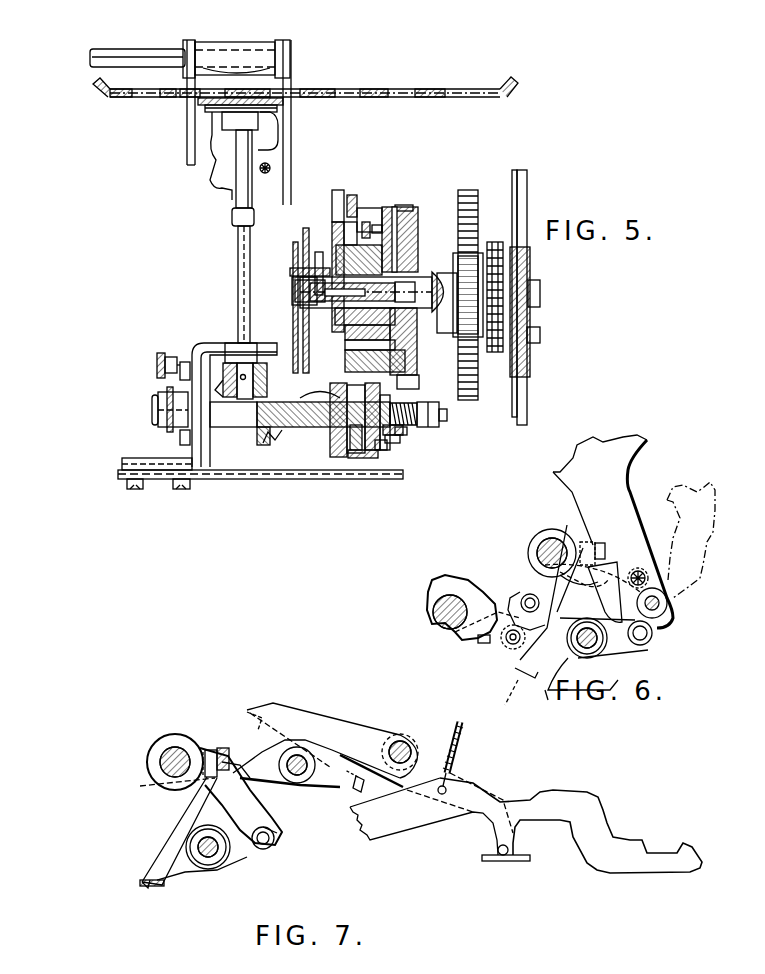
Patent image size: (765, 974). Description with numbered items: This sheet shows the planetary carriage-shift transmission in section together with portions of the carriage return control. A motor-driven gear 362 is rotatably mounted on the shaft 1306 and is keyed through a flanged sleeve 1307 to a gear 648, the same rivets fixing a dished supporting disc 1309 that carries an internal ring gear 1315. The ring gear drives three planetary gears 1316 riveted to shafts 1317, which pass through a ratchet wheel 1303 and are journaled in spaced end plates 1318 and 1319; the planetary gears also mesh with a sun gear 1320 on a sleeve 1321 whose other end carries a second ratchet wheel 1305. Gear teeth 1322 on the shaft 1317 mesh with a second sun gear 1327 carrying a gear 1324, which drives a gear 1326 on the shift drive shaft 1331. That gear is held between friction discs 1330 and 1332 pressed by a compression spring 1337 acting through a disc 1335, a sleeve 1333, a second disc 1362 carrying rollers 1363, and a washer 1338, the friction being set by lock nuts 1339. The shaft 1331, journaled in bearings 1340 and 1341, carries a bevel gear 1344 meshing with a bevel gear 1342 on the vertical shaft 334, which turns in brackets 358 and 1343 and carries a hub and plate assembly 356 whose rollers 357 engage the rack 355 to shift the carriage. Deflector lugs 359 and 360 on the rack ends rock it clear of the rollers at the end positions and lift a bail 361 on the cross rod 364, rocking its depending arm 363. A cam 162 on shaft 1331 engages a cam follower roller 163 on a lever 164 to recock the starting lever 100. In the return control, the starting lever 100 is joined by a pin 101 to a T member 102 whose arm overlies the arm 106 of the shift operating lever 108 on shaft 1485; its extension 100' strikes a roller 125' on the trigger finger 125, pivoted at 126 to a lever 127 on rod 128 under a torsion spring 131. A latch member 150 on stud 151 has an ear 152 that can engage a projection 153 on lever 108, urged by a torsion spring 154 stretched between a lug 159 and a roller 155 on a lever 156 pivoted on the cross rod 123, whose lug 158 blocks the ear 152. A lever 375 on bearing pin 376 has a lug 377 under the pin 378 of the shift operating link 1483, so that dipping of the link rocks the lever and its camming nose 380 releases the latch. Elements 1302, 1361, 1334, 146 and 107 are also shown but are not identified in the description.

In FIG. 5, the cross rod 364 is at (133, 50).
In FIG. 5, the depending arm 363 is at (190, 42).
In FIG. 5, the bail 361 is at (258, 42).
In FIG. 5, the shift rack 355 is at (372, 83).
In FIG. 5, the deflector lug 360 is at (97, 86).
In FIG. 5, the deflector lug 359 is at (514, 85).
In FIG. 5, the rollers 357 is at (210, 103).
In FIG. 5, the hub and plate assembly 356 is at (215, 110).
In FIG. 5, the bracket 358 is at (217, 155).
In FIG. 5, the vertical shaft 334 is at (238, 192).
In FIG. 5, the second bevel gear 1342 is at (222, 345).
In FIG. 5, the bracket 1343 is at (196, 350).
In FIG. 5, the friction disc 1330 is at (398, 478).
In FIG. 5, the disc 1335 is at (300, 392).
In FIG. 5, the cam follower roller 163 is at (157, 358).
In FIG. 5, the lever 164 is at (165, 370).
In FIG. 5, the bearing 1341 is at (178, 402).
In FIG. 5, the cam 162 is at (165, 410).
In FIG. 5, the gear 1324 is at (335, 212).
In FIG. 5, the second ratchet wheel 1305 is at (318, 250).
In FIG. 5, the hub 1302 is at (362, 195).
In FIG. 5, the ratchet wheel 1303 is at (372, 222).
In FIG. 5, the gear teeth 1322 is at (382, 228).
In FIG. 5, the internal ring gear 1315 is at (408, 206).
In FIG. 5, the dished supporting disc 1309 is at (412, 214).
In FIG. 5, the sun gear 1320 is at (412, 250).
In FIG. 5, the flanged sleeve 1307 is at (410, 265).
In FIG. 5, the second sun gear 1327 is at (298, 270).
In FIG. 5, the shaft 1306 is at (297, 282).
In FIG. 5, the end plate 1319 is at (330, 345).
In FIG. 5, the sleeve 1321 is at (410, 340).
In FIG. 5, the shaft 1317 is at (410, 352).
In FIG. 5, the end plate 1318 is at (412, 362).
In FIG. 5, the gear 648 is at (418, 385).
In FIG. 5, the gear 362 is at (478, 215).
In FIG. 5, the planetary gears 1316 is at (478, 384).
In FIG. 5, the bearing 1340 is at (305, 445).
In FIG. 5, the beveled gear 1344 is at (290, 432).
In FIG. 5, the gear 1326 is at (338, 458).
In FIG. 5, the friction disc 1332 is at (352, 452).
In FIG. 5, the disk 1361 is at (372, 455).
In FIG. 5, the disk 1334 is at (385, 455).
In FIG. 5, the second disc 1362 is at (375, 458).
In FIG. 5, the rollers 1363 is at (388, 450).
In FIG. 5, the sleeve 1333 is at (392, 424).
In FIG. 5, the shift drive shaft 1331 is at (447, 415).
In FIG. 5, the lock nuts 1339 is at (404, 425).
In FIG. 5, the washer 1338 is at (395, 437).
In FIG. 5, the compression spring 1337 is at (407, 431).
In FIG. 6, the starting lever 100 is at (613, 531).
In FIG. 6, the T member 102 is at (708, 485).
In FIG. 6, the cross rod 123 is at (548, 540).
In FIG. 7, the cross rod 123 is at (160, 760).
In FIG. 6, the lever 156 is at (528, 548).
In FIG. 7, the lever 156 is at (180, 790).
In FIG. 6, the latch member 150 is at (572, 528).
In FIG. 7, the latch member 150 is at (185, 820).
In FIG. 6, the extension 100' is at (571, 525).
In FIG. 6, the latching ear 152 is at (602, 543).
In FIG. 7, the latching ear 152 is at (210, 750).
In FIG. 6, the lug 158 is at (612, 563).
In FIG. 7, the lug 158 is at (157, 787).
In FIG. 6, the pin 101 is at (668, 605).
In FIG. 6, the trigger finger 125 is at (564, 570).
In FIG. 6, the roller 125' is at (513, 605).
In FIG. 6, the lever 127 is at (450, 637).
In FIG. 6, the rod 128 is at (433, 618).
In FIG. 6, the torsion spring 131 is at (472, 640).
In FIG. 6, the pivot 126 is at (510, 650).
In FIG. 6, the stud 151 is at (595, 652).
In FIG. 7, the stud 151 is at (212, 858).
In FIG. 6, the torsion spring 154 is at (643, 645).
In FIG. 7, the torsion spring 154 is at (258, 848).
In FIG. 6, the arm 146 is at (515, 680).
In FIG. 6, the lug 159 is at (550, 688).
In FIG. 7, the lug 159 is at (162, 882).
In FIG. 7, the projection 153 is at (228, 748).
In FIG. 7, the camming nose 380 is at (243, 785).
In FIG. 7, the arm 106 is at (255, 712).
In FIG. 7, the shift operating lever 108 is at (340, 740).
In FIG. 7, the lever 375 is at (385, 735).
In FIG. 7, the shaft 1485 is at (300, 778).
In FIG. 7, the bearing pin 376 is at (408, 745).
In FIG. 7, the spring anchor 107 is at (404, 759).
In FIG. 7, the shift operating link 1483 is at (600, 792).
In FIG. 7, the pin 378 is at (500, 856).
In FIG. 7, the lug 377 is at (520, 861).
In FIG. 7, the roller 155 is at (272, 840).